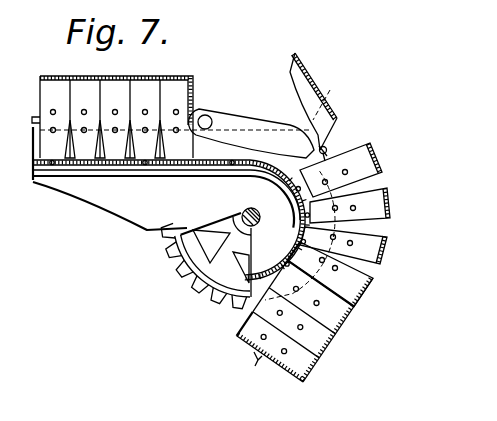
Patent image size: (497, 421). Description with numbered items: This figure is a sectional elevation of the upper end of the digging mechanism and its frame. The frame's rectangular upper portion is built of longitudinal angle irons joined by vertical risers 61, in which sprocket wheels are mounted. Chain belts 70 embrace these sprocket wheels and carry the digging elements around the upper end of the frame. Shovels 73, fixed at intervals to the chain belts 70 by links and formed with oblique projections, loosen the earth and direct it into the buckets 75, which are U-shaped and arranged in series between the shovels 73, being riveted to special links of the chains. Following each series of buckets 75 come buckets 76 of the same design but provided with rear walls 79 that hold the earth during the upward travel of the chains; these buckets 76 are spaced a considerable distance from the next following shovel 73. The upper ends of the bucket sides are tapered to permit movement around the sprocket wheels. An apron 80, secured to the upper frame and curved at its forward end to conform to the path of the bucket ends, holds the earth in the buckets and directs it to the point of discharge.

The buckets 75 is at (62, 67).
The buckets 76 is at (168, 92).
The rear walls 79 is at (193, 90).
The shovels 73 is at (306, 79).
The chain belts 70 is at (328, 149).
The apron 80 is at (92, 165).
The vertical risers 61 is at (257, 361).